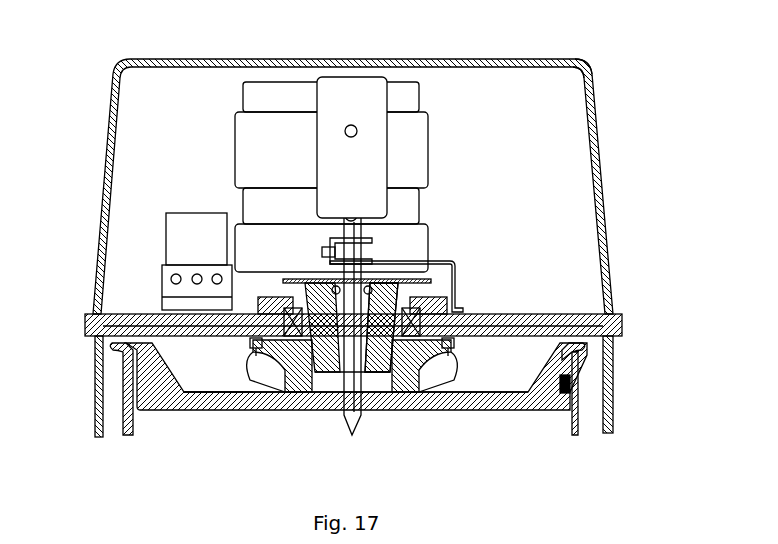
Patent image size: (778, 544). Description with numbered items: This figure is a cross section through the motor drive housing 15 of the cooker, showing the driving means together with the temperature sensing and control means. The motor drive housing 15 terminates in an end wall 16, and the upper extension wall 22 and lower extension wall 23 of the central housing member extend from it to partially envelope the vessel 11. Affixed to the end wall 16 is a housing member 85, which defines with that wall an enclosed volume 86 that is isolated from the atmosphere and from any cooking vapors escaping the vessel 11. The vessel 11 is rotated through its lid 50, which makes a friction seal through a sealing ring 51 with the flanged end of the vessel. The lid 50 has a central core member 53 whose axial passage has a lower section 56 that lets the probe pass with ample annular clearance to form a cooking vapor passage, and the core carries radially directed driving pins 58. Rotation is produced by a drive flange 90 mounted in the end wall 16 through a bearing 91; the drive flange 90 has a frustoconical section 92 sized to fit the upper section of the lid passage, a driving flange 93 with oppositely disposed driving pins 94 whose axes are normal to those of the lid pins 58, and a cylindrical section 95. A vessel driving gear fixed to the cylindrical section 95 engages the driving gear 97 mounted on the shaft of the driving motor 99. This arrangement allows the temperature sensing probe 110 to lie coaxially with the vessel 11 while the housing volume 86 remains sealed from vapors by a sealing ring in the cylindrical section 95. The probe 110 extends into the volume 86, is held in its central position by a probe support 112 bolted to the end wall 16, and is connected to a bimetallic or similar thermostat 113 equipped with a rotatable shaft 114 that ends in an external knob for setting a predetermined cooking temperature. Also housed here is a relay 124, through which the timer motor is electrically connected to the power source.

The vessel 11 is at (580, 418).
The motor drive housing 15 is at (608, 183).
The end wall 16 is at (624, 321).
The upper extension wall 22 is at (613, 374).
The lower extension wall 23 is at (95, 358).
The lid 50 is at (521, 410).
The sealing ring 51 is at (571, 388).
The central core member 53 is at (262, 392).
The lower section 56 is at (370, 392).
The driving pins 58 is at (455, 372).
The housing member 85 is at (597, 132).
The enclosed volume 86 is at (568, 95).
The drive flange 90 is at (205, 392).
The bearing 91 is at (447, 300).
The frustoconical section 92 is at (386, 380).
The driving flange 93 is at (456, 342).
The driving pins 94 is at (292, 340).
The cylindrical section 95 is at (388, 291).
The driving gear 97 is at (378, 271).
The driving motor 99 is at (415, 158).
The temperature sensing probe 110 is at (349, 392).
The probe support 112 is at (436, 283).
The thermostat 113 is at (372, 150).
The rotatable shaft 114 is at (353, 126).
The relay 124 is at (190, 232).